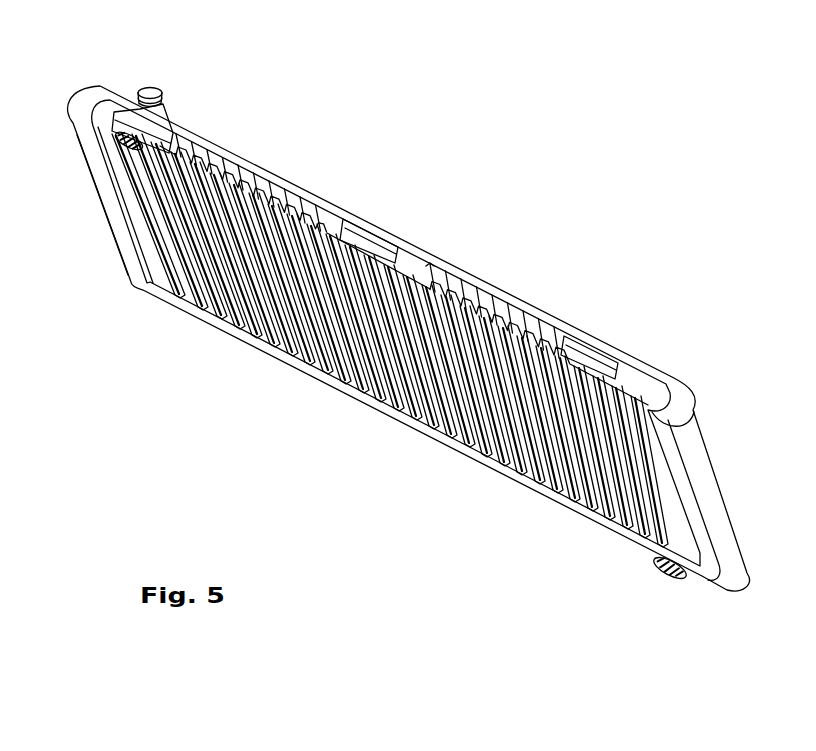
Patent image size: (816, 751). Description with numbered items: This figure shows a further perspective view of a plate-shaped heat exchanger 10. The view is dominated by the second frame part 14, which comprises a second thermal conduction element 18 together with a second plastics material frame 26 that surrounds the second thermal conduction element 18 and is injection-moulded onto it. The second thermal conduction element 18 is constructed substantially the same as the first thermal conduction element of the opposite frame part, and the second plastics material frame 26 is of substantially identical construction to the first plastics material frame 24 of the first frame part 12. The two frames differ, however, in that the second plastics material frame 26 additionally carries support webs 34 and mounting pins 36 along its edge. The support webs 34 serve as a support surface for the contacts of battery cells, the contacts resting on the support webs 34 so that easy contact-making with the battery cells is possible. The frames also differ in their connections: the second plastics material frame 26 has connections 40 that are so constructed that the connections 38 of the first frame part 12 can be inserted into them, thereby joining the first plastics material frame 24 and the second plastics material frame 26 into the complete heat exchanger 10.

The plate-shaped heat exchanger 10 is at (468, 105).
The first frame part 12 is at (464, 257).
The second frame part 14 is at (304, 398).
The second thermal conduction element 18 is at (400, 395).
The first plastics material frame 24 is at (662, 378).
The second plastics material frame 26 is at (130, 268).
The support webs 34 is at (283, 185).
The mounting pins 36 is at (160, 128).
The connections 38 is at (149, 86).
The connections 40 is at (118, 140).